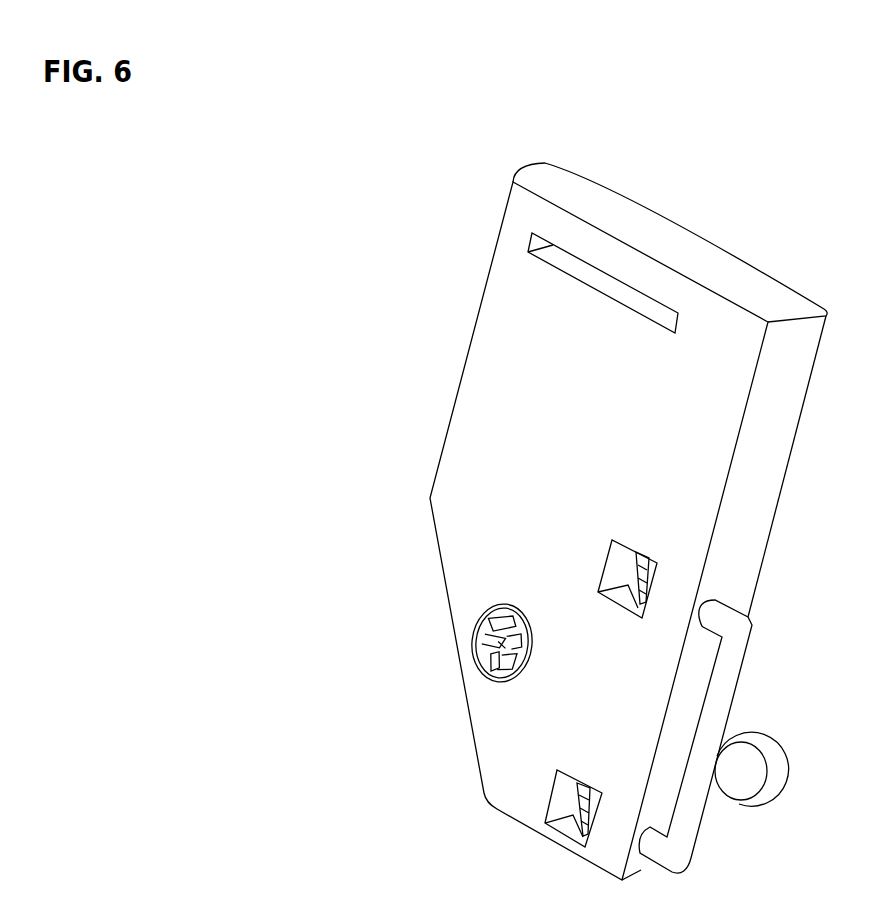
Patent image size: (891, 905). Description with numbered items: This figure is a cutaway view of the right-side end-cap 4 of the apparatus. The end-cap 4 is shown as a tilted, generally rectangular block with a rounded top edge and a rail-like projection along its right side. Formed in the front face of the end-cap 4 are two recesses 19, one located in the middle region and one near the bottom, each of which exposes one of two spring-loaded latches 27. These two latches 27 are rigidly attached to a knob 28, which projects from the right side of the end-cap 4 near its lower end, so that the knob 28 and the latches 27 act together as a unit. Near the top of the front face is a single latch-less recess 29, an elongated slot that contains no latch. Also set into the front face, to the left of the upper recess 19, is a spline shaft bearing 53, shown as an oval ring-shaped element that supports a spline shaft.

The end-cap 4 is at (612, 205).
The latch-less recess 29 is at (620, 287).
The recess 19 is at (612, 567).
The spring-loaded latch 27 is at (640, 558).
The spline shaft bearing 53 is at (482, 647).
The knob 28 is at (773, 758).